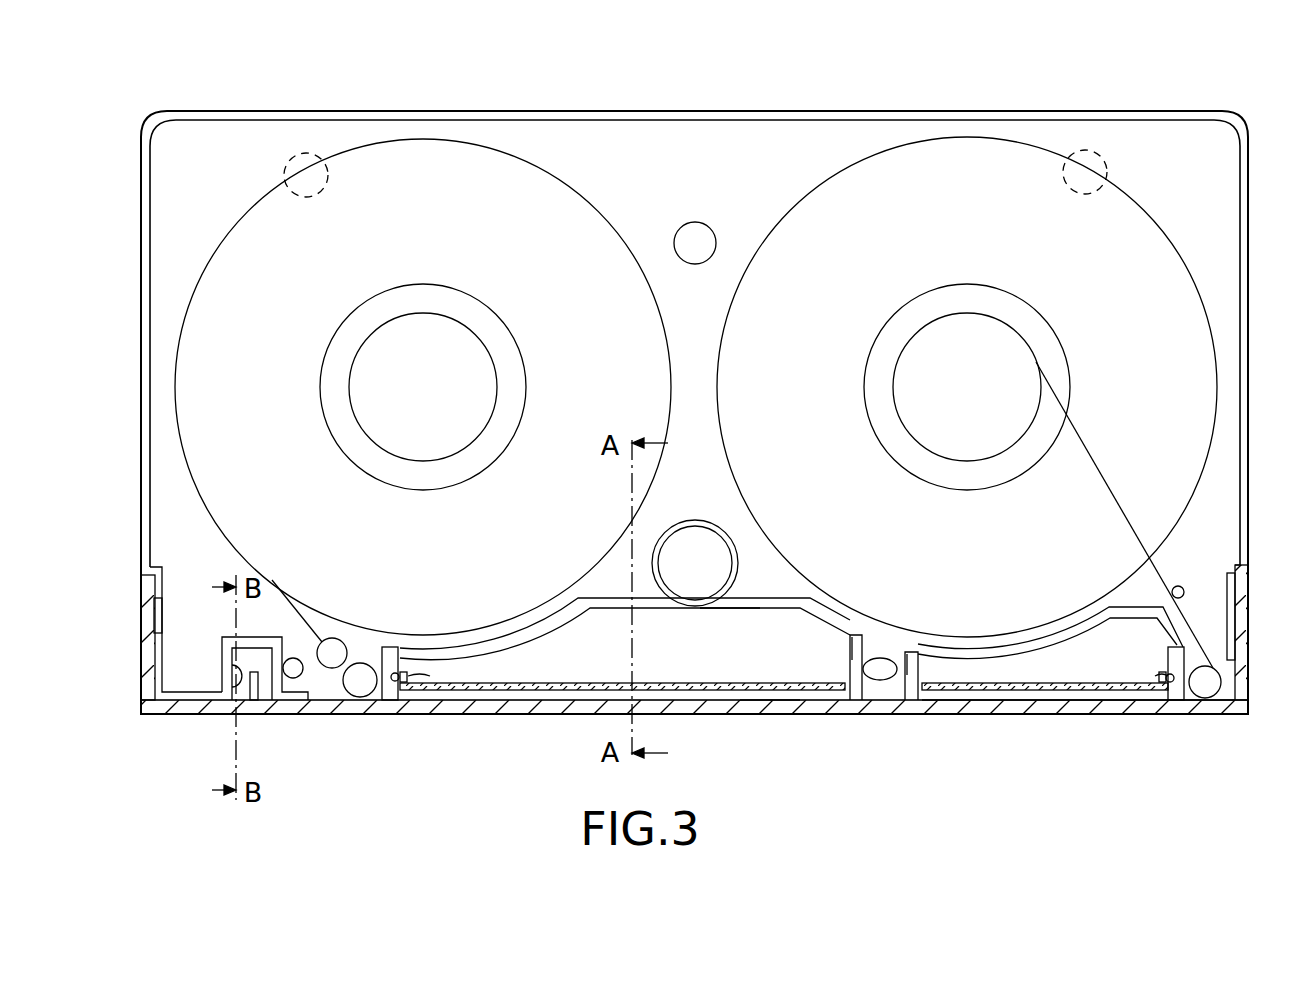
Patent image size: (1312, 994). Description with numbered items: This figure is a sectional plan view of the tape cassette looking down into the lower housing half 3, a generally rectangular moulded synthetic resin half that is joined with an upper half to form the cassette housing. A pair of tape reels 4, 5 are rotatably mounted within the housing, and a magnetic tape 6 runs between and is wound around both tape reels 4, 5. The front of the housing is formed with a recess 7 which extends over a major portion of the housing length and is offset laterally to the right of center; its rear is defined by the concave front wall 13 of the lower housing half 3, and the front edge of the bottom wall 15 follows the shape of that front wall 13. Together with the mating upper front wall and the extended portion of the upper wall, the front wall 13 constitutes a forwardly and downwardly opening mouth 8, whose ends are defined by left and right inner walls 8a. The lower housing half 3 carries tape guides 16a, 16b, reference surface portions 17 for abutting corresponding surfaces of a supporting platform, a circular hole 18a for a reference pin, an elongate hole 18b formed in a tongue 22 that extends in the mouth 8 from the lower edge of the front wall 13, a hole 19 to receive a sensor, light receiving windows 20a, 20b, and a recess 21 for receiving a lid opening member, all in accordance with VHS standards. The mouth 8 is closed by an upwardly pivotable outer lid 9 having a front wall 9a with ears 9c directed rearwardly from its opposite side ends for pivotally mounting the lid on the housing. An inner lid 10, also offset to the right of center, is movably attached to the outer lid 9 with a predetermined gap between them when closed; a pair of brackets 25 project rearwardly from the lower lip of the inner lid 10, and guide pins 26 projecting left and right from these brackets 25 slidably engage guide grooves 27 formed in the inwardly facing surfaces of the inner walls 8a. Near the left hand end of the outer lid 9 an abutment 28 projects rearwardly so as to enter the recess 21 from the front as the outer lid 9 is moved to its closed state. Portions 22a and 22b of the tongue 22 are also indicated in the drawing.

The lower housing half 3 is at (746, 111).
The tape reel 4 is at (990, 158).
The tape reel 5 is at (441, 158).
The magnetic tape 6 is at (1108, 493).
The recess 7 is at (770, 682).
The mouth 8 is at (722, 660).
The inner wall 8a is at (400, 650).
The outer lid 9 is at (540, 712).
The front wall 9a is at (1028, 713).
The ear 9c is at (141, 664).
The inner lid 10 is at (600, 683).
The front wall 13 is at (765, 609).
The bottom wall 15 is at (152, 499).
The tape guide 16a is at (1205, 698).
The tape guide 16b is at (360, 692).
The reference surface portion 17 is at (312, 155).
The circular hole 18a is at (296, 678).
The elongate hole 18b is at (880, 681).
The hole 19 is at (690, 550).
The light receiving window 20a is at (1232, 640).
The light receiving window 20b is at (157, 625).
The recess 21 is at (237, 682).
The tongue 22 is at (905, 696).
The holder arm 22a is at (908, 655).
The holder arm 22b is at (856, 640).
The bracket 25 is at (430, 676).
The guide pin 26 is at (398, 692).
The guide groove 27 is at (388, 648).
The abutment 28 is at (262, 692).